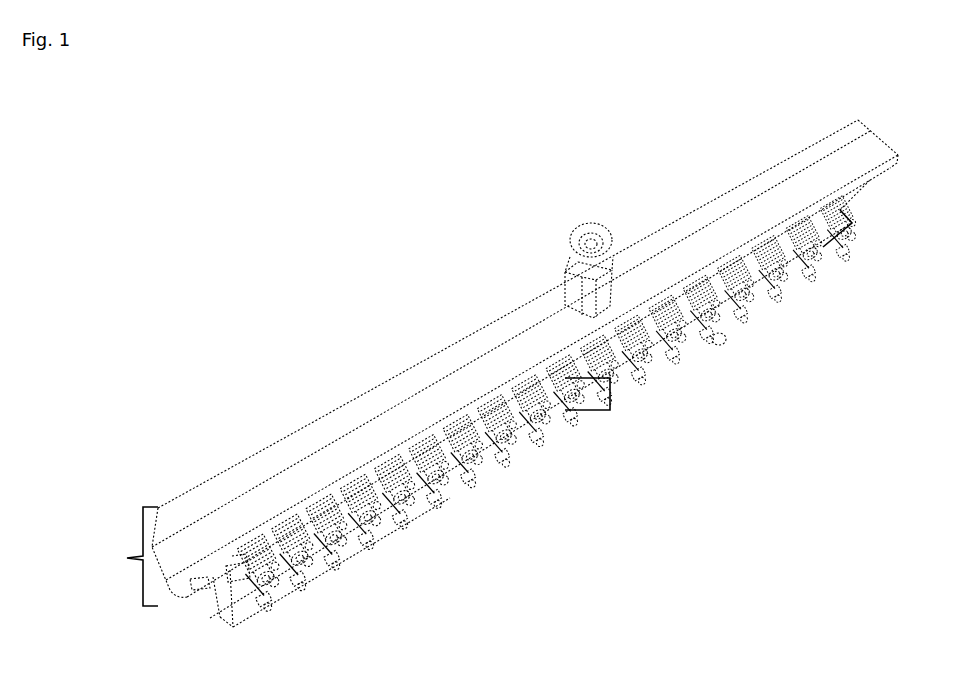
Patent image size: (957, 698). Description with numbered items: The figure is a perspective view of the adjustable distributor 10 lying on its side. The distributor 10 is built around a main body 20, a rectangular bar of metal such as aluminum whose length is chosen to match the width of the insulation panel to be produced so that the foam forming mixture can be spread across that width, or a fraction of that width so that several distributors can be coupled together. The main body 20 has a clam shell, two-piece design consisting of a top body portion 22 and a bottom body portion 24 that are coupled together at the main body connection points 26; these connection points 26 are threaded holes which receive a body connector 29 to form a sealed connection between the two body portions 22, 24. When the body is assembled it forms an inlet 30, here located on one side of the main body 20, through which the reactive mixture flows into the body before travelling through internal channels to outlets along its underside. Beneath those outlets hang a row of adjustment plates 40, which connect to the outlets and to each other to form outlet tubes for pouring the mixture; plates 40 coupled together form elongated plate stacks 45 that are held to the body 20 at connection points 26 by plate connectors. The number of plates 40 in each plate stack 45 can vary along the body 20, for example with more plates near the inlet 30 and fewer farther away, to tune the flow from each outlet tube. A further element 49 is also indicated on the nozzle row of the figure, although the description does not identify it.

The adjustable distributor 10 is at (492, 396).
The main body 20 is at (136, 556).
The top body portion 22 is at (373, 402).
The bottom body portion 24 is at (457, 387).
The main body connection points 26 is at (199, 584).
The body connector 29 is at (239, 574).
The inlet 30 is at (598, 275).
The adjustment plates 40 is at (512, 450).
The plate stack 45 is at (612, 394).
The nozzle tip 49 is at (726, 346).